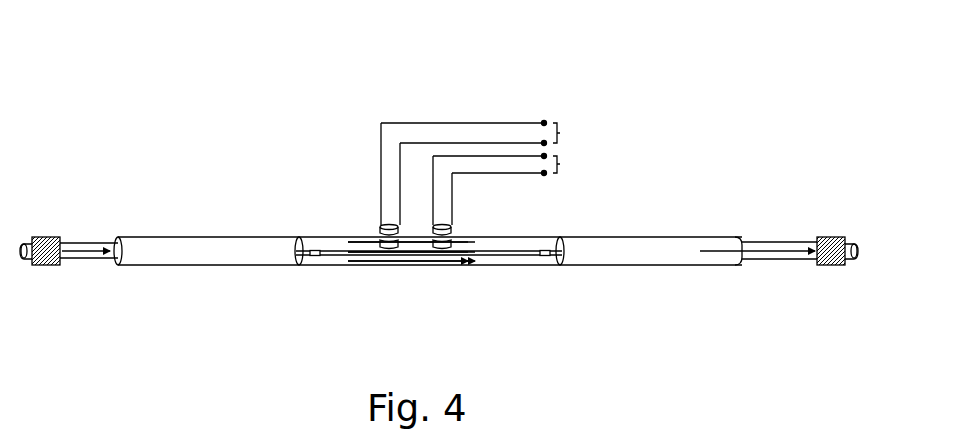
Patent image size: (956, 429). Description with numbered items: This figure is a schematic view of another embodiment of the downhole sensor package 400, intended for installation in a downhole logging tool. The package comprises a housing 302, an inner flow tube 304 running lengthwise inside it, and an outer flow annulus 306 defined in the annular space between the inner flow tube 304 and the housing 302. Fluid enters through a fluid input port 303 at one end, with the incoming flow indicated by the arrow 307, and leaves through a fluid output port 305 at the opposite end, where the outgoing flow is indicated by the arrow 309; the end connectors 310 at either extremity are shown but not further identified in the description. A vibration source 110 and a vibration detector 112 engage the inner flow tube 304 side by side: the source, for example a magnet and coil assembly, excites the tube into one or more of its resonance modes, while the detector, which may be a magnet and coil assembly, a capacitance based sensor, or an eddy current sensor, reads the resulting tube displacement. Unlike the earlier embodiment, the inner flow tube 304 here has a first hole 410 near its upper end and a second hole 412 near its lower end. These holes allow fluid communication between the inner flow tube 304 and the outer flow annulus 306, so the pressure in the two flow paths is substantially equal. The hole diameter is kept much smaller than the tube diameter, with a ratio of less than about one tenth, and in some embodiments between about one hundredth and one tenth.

The downhole sensor package 400 is at (253, 63).
The housing 302 is at (167, 236).
The fluid input port 303 is at (113, 262).
The inner flow tube 304 is at (342, 248).
The fluid output port 305 is at (745, 263).
The outer flow annulus 306 is at (527, 240).
The inlet flow 307 is at (95, 247).
The outlet flow 309 is at (768, 245).
The connector fitting 310 is at (48, 237).
The vibration source 110 is at (390, 225).
The vibration detector 112 is at (442, 225).
The first hole 410 is at (315, 256).
The second hole 412 is at (543, 256).